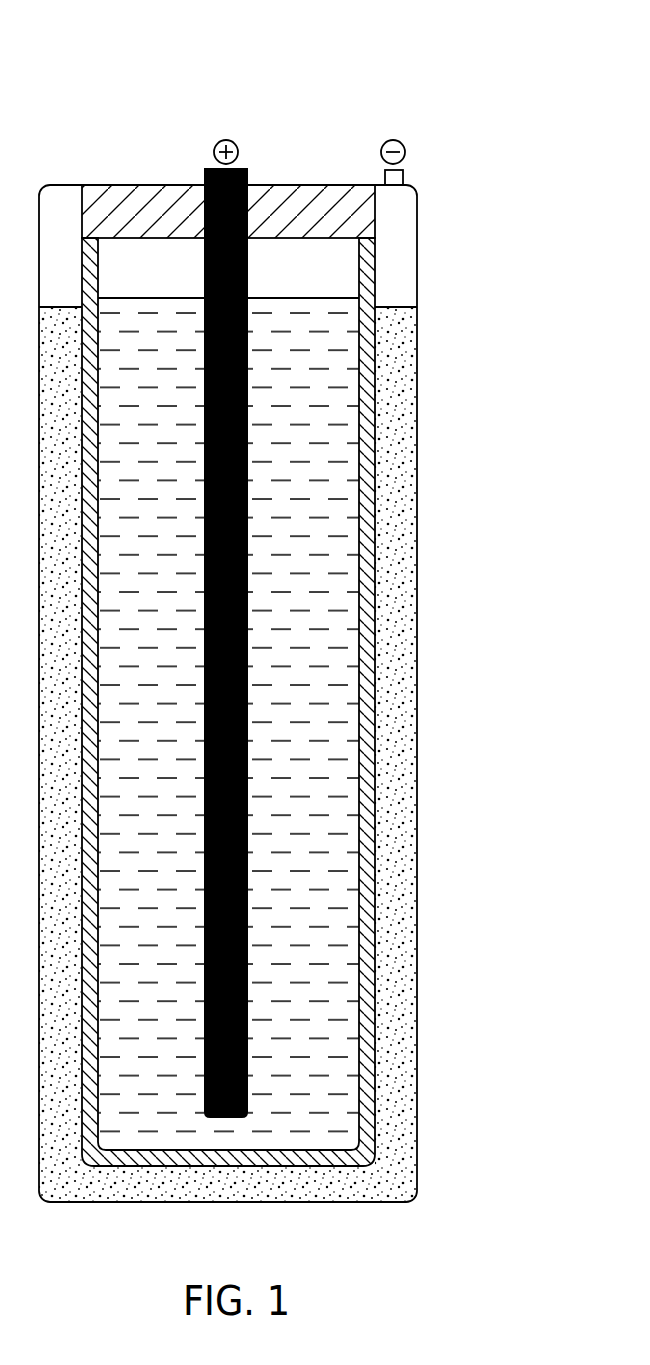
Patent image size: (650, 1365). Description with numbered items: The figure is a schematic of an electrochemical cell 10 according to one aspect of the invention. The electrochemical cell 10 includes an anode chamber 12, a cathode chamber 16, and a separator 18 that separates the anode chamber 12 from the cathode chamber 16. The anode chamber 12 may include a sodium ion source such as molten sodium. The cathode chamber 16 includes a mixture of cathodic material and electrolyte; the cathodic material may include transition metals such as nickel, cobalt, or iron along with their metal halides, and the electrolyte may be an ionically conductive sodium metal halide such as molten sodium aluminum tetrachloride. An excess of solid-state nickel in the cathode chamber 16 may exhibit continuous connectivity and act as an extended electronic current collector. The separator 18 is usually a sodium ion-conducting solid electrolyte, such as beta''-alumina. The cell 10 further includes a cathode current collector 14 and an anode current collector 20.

The electrochemical cell 10 is at (435, 60).
The anode chamber 12 is at (410, 662).
The cathode current collector 14 is at (248, 340).
The cathode chamber 16 is at (309, 431).
The separator 18 is at (370, 530).
The anode current collector 20 is at (417, 938).